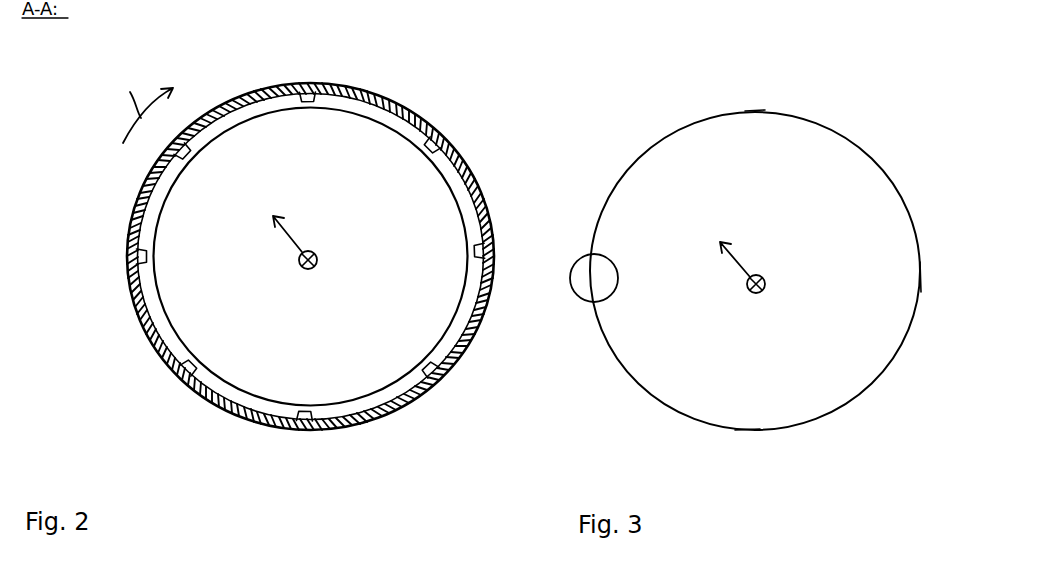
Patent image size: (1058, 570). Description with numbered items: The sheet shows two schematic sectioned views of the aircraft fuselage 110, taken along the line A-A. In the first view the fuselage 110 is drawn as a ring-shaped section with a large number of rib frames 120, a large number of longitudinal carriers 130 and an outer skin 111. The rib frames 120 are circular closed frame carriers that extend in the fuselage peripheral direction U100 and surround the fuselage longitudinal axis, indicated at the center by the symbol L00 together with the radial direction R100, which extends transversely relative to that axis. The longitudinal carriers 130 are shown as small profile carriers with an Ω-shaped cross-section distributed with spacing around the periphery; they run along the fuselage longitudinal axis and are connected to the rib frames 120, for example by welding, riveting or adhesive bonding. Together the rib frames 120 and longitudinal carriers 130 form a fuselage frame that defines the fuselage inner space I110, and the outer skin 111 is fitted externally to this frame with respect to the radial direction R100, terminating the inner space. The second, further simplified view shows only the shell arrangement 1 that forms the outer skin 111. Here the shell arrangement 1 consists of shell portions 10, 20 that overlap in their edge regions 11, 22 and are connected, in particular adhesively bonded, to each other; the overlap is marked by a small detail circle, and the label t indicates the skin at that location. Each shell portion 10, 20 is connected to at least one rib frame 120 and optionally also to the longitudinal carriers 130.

In FIG. 2, the fuselage 110 is at (403, 77).
In FIG. 3, the fuselage 110 is at (872, 77).
In FIG. 2, the outer skin 111 is at (272, 86).
In FIG. 2, the rib frames 120 is at (233, 118).
In FIG. 2, the longitudinal carriers 130 is at (432, 145).
In FIG. 2, the radial direction R100 is at (299, 235).
In FIG. 3, the radial direction R100 is at (750, 259).
In FIG. 2, the axis of rotation L00 is at (317, 261).
In FIG. 3, the axis of rotation L00 is at (765, 285).
In FIG. 2, the fuselage inner space I110 is at (342, 333).
In FIG. 3, the fuselage inner space I110 is at (766, 362).
In FIG. 2, the fuselage peripheral direction U100 is at (127, 100).
In FIG. 3, the shell arrangement 1 is at (800, 75).
In FIG. 3, the shell portion 10 is at (632, 375).
In FIG. 3, the edge region 11 is at (592, 278).
In FIG. 3, the shell portion 20 is at (632, 172).
In FIG. 3, the edge region 22 is at (577, 268).
In FIG. 3, the thickness t is at (588, 303).